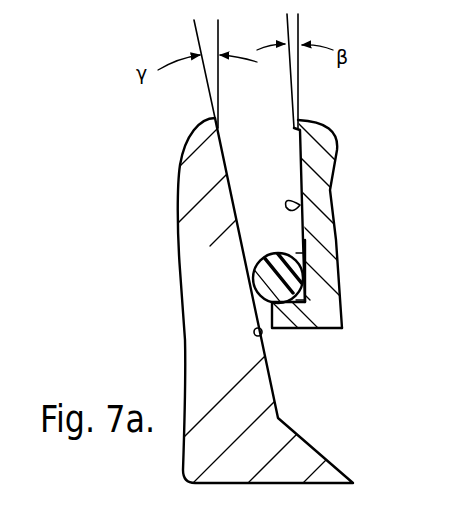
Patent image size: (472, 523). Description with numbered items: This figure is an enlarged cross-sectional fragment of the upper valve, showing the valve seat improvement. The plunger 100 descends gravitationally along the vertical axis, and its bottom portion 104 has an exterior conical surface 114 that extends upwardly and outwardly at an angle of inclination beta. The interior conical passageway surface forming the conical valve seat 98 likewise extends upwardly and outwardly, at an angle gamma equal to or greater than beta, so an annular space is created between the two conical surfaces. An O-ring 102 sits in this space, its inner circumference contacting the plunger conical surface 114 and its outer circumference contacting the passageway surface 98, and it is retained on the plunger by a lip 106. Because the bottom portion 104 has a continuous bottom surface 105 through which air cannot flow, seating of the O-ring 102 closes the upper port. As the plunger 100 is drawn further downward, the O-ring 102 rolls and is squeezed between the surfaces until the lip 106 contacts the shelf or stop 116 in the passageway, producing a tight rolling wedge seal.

The conical valve seat 98 is at (250, 184).
The plunger-type valve member 100 is at (313, 150).
The O-ring 102 is at (266, 287).
The bottom portion 104 is at (332, 288).
The continuous bottom surface 105 is at (313, 330).
The lip 106 is at (262, 334).
The exterior conical surface 114 is at (300, 205).
The shelf or stop 116 is at (282, 418).